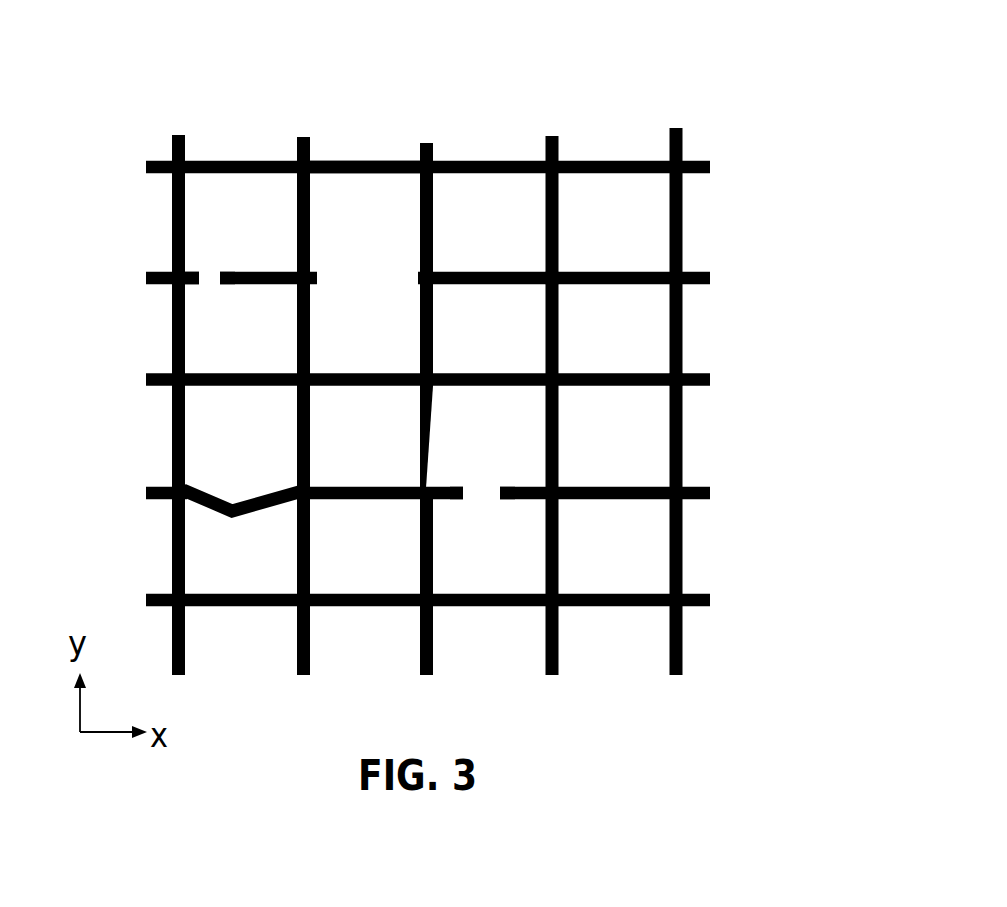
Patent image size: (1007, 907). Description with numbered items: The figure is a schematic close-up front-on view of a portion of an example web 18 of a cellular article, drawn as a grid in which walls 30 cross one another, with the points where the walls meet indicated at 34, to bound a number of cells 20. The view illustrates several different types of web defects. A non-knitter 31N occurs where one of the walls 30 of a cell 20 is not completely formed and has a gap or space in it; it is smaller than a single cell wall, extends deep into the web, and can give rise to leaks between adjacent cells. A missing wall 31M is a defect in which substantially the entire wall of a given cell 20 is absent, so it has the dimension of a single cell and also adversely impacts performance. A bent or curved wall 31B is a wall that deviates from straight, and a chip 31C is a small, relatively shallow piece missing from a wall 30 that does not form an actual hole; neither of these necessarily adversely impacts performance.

The web 18 is at (447, 344).
The cell 20 is at (488, 215).
The wall 30 is at (298, 207).
The bent or curved wall 31B is at (232, 495).
The chip 31C is at (430, 463).
The non-knitter 31N is at (210, 282).
The missing wall 31M is at (355, 277).
The line intersections 34 is at (430, 375).